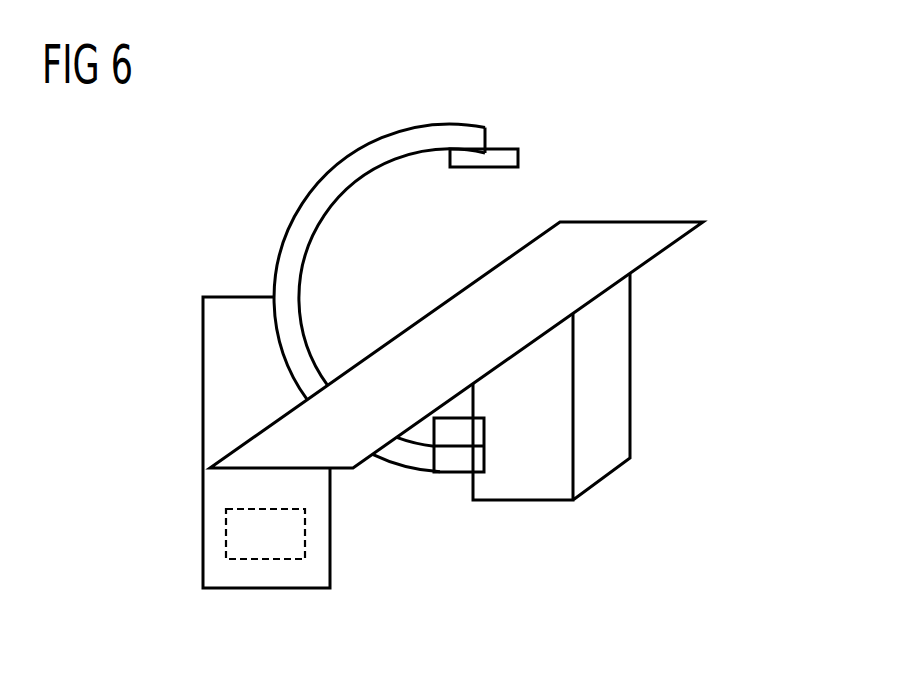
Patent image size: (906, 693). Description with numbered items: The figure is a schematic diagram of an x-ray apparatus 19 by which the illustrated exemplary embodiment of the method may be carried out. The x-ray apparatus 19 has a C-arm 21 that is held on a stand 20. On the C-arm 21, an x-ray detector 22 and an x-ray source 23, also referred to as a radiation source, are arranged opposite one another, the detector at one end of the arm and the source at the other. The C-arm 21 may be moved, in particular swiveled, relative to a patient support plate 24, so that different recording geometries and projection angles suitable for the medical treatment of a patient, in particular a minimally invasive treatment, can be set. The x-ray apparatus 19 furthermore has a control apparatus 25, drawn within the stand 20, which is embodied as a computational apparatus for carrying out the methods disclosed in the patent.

The x-ray apparatus 19 is at (150, 221).
The stand 20 is at (242, 297).
The C-arm 21 is at (400, 130).
The x-ray detector 22 is at (518, 153).
The x-ray source 23 is at (468, 438).
The patient support plate 24 is at (445, 320).
The control apparatus 25 is at (275, 559).